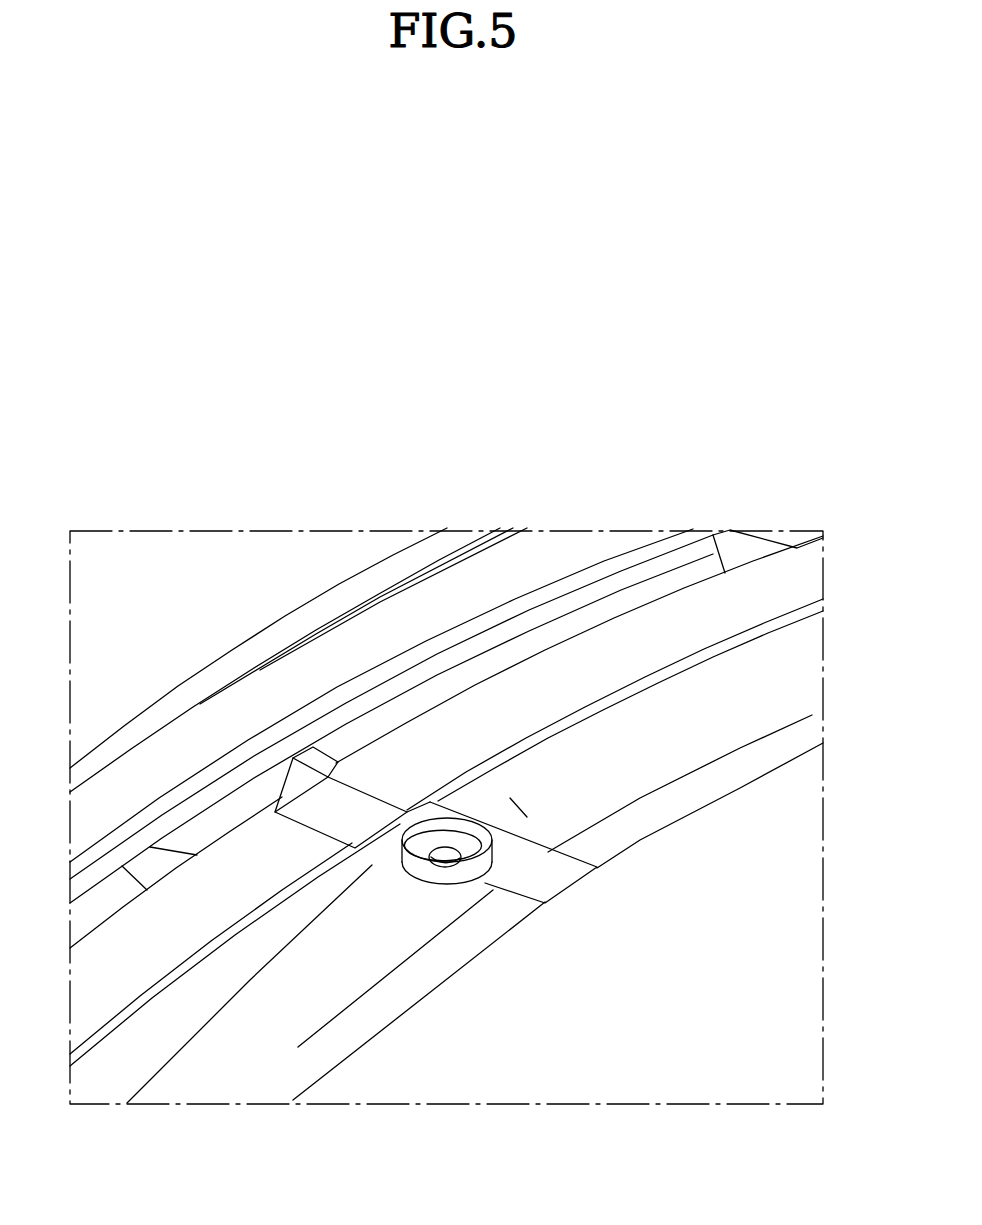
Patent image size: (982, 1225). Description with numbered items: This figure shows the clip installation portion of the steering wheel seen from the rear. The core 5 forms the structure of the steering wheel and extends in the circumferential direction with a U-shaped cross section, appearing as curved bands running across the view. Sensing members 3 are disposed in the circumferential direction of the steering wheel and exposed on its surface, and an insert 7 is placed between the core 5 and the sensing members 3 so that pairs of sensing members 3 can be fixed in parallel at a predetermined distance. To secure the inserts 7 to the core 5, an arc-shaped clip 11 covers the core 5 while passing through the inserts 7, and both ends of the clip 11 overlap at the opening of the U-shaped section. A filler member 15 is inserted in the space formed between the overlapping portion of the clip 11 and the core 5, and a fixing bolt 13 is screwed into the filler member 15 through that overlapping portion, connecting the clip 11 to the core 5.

The sensing member 3 is at (273, 705).
The core 5 is at (480, 851).
The insert 7 is at (425, 672).
The clip 11 is at (231, 953).
The fixing bolt 13 is at (446, 1008).
The filler member 15 is at (513, 971).